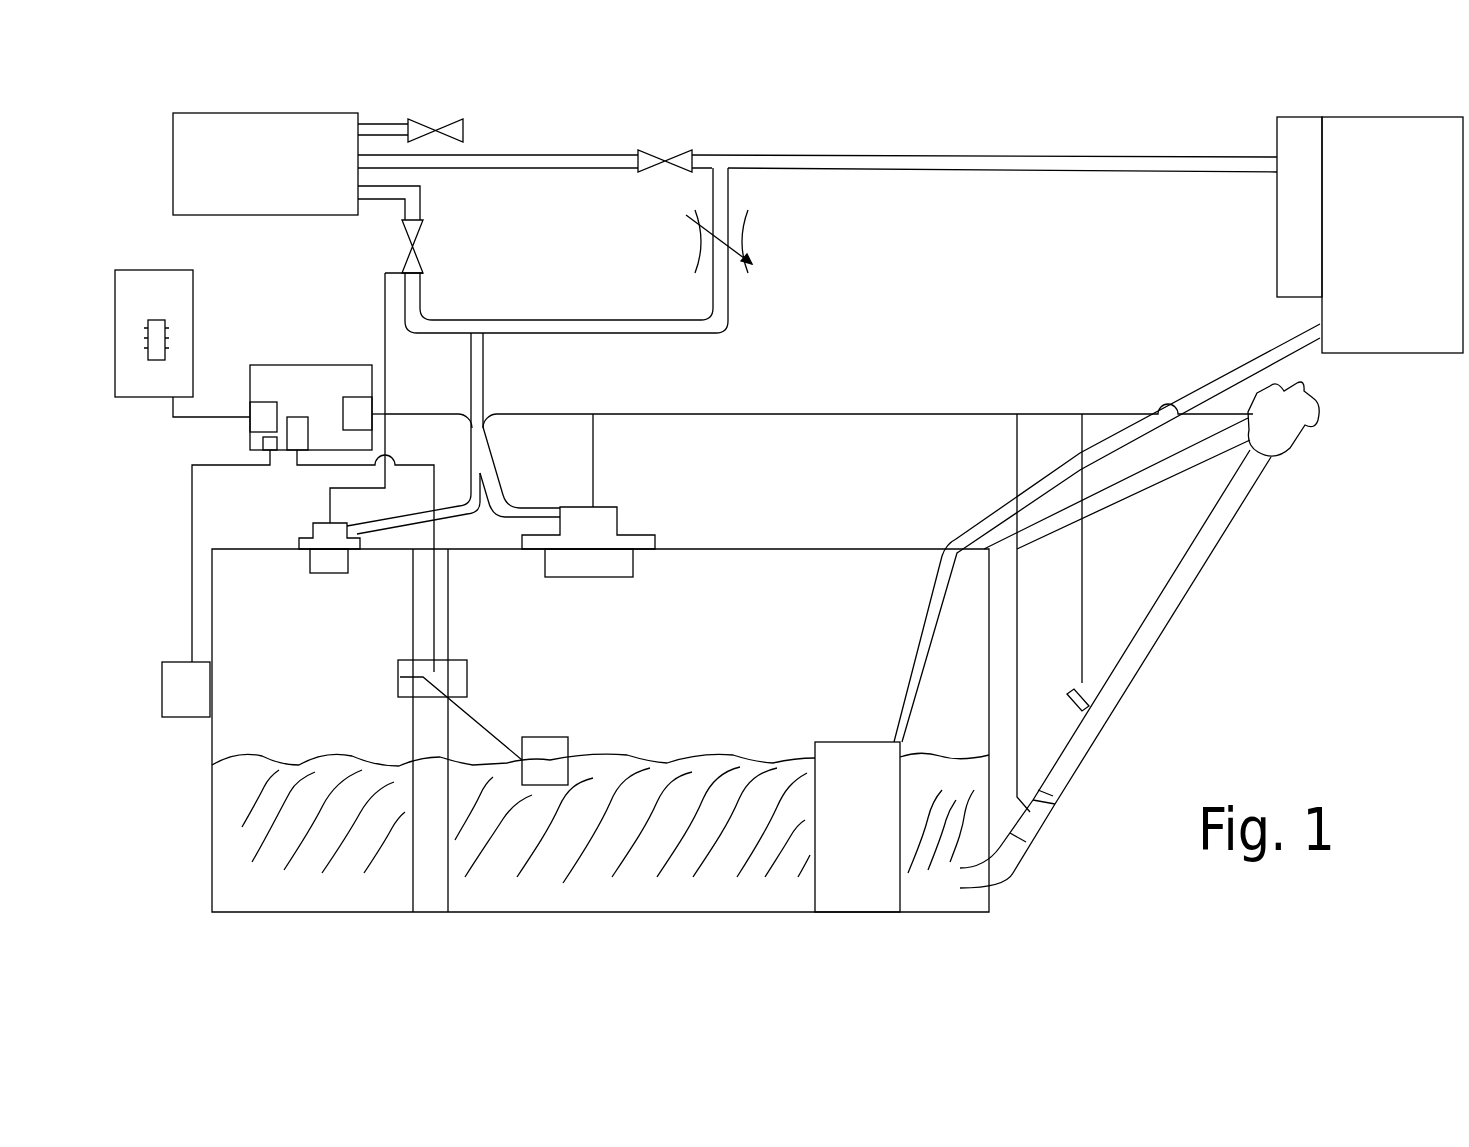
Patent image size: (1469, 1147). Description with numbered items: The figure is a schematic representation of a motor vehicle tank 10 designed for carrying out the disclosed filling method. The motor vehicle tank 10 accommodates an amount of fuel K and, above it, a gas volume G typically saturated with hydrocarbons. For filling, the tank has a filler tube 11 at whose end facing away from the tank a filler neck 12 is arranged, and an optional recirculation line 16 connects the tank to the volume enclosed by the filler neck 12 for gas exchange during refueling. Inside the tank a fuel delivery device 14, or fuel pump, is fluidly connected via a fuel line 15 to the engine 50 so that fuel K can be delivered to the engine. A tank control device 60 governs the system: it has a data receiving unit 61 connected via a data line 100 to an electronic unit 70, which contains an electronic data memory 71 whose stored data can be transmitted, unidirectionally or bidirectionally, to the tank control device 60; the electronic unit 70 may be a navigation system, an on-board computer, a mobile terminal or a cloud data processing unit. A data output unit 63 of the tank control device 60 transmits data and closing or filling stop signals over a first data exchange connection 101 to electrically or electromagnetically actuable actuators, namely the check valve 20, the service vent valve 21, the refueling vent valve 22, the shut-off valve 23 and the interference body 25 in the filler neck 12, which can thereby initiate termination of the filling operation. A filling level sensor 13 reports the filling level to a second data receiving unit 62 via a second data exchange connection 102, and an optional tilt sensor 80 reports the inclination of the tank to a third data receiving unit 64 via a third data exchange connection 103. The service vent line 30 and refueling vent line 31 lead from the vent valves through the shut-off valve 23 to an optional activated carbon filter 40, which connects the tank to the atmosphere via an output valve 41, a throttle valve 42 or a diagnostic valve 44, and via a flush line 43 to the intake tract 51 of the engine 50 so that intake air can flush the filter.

The motor vehicle tank 10 is at (193, 773).
The filler tube 11 is at (1170, 600).
The filler neck 12 is at (1282, 440).
The filling level sensor 13 is at (427, 725).
The fuel delivery device 14 is at (856, 852).
The fuel line 15 is at (948, 540).
The recirculation line 16 is at (1042, 525).
The check valve 20 is at (1037, 823).
The service vent valve 21 is at (320, 572).
The refueling vent valve 22 is at (597, 523).
The shut-off valve 23 is at (422, 228).
The interference body 25 is at (1082, 688).
The service vent line 30 is at (392, 522).
The refueling vent line 31 is at (530, 505).
The activated carbon filter 40 is at (185, 150).
The output valve 41 is at (655, 150).
The throttle valve 42 is at (742, 225).
The flush line 43 is at (1030, 165).
The diagnostic valve 44 is at (425, 122).
The engine 50 is at (1400, 332).
The intake tract 51 is at (1290, 237).
The tank control device 60 is at (320, 382).
The data receiving unit 61 is at (262, 402).
The second data receiving unit 62 is at (300, 418).
The data output unit 63 is at (357, 398).
The third data receiving unit 64 is at (258, 455).
The electronic unit 70 is at (190, 290).
The electronic data memory 71 is at (152, 362).
The tilt sensor 80 is at (176, 716).
The data line 100 is at (217, 417).
The first data exchange connection 101 is at (387, 358).
The second data exchange connection 102 is at (317, 473).
The third data exchange connection 103 is at (192, 557).
The gas volume G is at (825, 572).
The fuel K is at (253, 840).